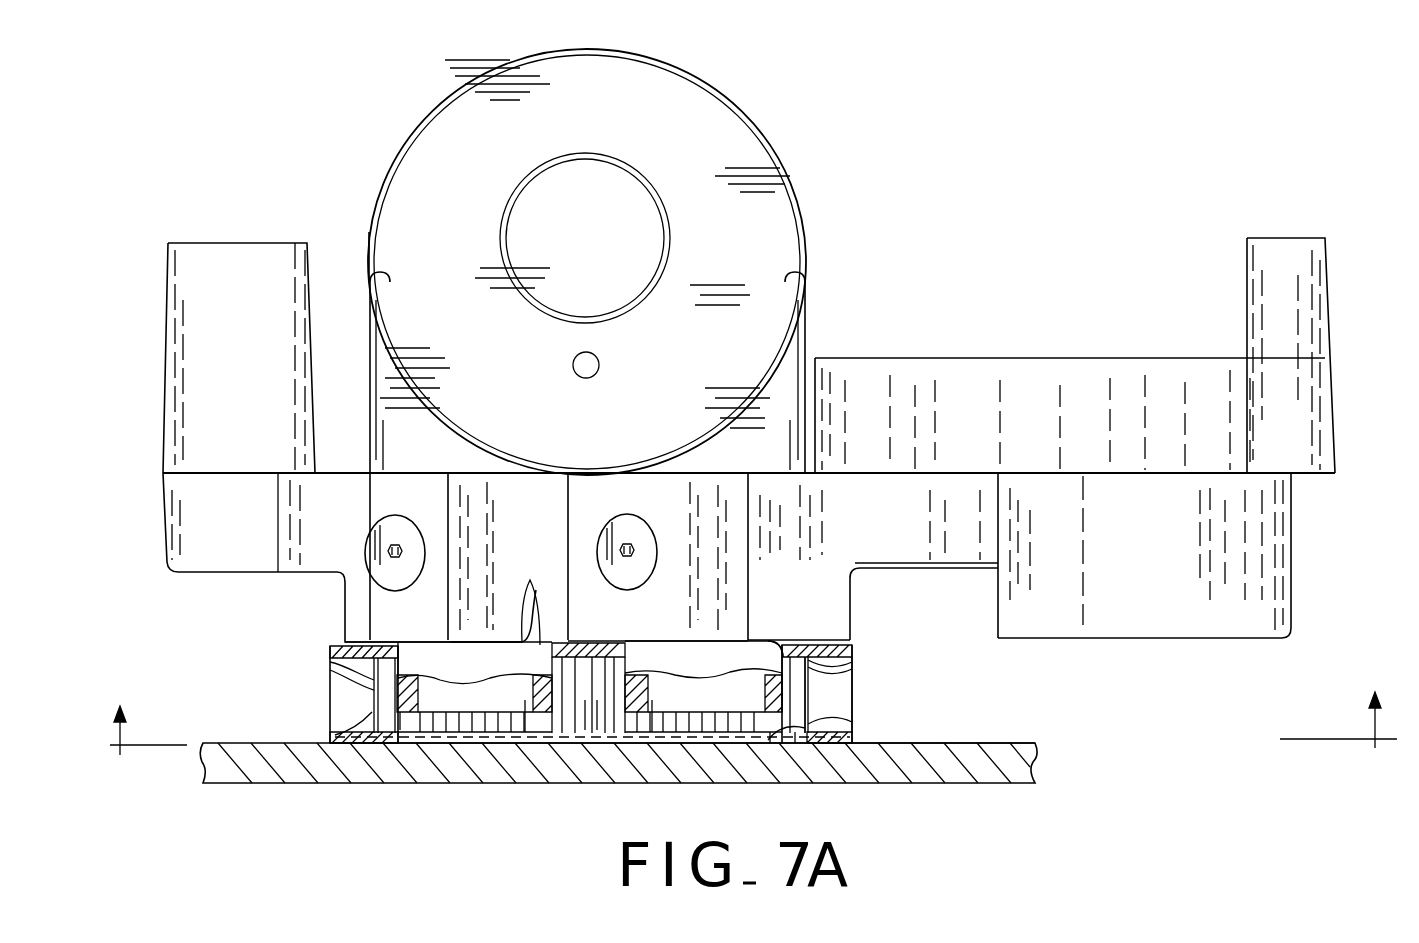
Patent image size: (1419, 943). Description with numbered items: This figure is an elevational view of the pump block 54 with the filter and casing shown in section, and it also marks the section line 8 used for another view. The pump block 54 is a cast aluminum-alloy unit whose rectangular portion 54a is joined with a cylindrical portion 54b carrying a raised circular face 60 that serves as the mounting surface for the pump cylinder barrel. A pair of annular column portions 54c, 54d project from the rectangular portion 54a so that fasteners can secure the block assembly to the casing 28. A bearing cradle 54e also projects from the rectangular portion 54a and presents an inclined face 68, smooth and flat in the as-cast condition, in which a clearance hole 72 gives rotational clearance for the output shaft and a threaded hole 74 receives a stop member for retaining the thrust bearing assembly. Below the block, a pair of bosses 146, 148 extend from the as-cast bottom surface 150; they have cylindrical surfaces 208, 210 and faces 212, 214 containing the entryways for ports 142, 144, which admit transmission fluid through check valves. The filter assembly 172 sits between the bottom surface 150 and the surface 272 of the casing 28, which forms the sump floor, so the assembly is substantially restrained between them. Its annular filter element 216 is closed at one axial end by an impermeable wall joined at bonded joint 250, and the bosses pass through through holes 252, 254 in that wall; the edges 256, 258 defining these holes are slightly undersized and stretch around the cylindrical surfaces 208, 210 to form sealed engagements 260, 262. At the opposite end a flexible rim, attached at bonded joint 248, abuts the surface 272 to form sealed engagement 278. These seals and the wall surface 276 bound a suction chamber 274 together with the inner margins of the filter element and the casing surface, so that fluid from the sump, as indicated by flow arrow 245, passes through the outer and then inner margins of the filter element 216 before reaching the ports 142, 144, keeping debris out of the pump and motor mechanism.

The bearing cradle 54e is at (707, 80).
The clearance hole 72 is at (652, 195).
The inclined face 68 is at (740, 243).
The threaded hole 74 is at (598, 372).
The rectangular portion 54a is at (490, 520).
The pump block 54 is at (913, 240).
The annular column portion 54d is at (183, 258).
The annular column portion 54c is at (1313, 240).
The raised circular face 60 is at (1045, 355).
The cylindrical portion 54b is at (1291, 565).
The bottom surface 150 is at (852, 645).
The boss 146 is at (430, 652).
The boss 148 is at (678, 657).
The through hole 252 is at (530, 645).
The edge 258 is at (607, 642).
The surface of impermeable wall 276 is at (563, 665).
The sealed engagement 262 is at (608, 700).
The annular filter element 216 is at (590, 715).
The edge 256 is at (383, 650).
The bonded joint 250 is at (340, 665).
The sealed engagement 260 is at (332, 672).
The cylindrical surface 208 is at (332, 683).
The bonded joint 248 is at (332, 717).
The face 212 is at (427, 712).
The face 214 is at (712, 682).
The through hole 254 is at (770, 645).
The cylindrical surface 210 is at (783, 686).
The filter assembly 172 is at (856, 705).
The surface 272 is at (1010, 742).
The casing 28 is at (293, 773).
The suction chamber 274 is at (403, 720).
The port 142 is at (525, 705).
The port 144 is at (652, 700).
The sealed engagement 278 is at (795, 740).
The flow arrow 245 is at (770, 745).
The section line 8- 8 is at (753, 710).